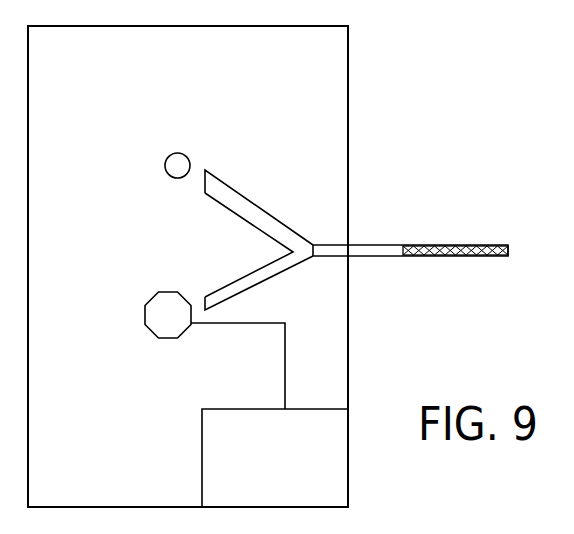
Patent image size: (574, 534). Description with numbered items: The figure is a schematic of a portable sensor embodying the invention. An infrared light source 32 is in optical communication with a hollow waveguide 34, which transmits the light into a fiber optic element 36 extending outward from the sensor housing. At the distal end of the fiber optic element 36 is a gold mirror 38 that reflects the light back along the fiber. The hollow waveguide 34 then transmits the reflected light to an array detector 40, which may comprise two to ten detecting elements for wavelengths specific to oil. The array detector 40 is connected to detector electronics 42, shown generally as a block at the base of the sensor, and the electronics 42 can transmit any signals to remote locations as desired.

The infrared light source 32 is at (166, 156).
The hollow waveguide 34 is at (237, 190).
The fiber optic element 36 is at (373, 257).
The gold mirror 38 is at (509, 246).
The array detector 40 is at (170, 292).
The detector electronics 42 is at (218, 409).